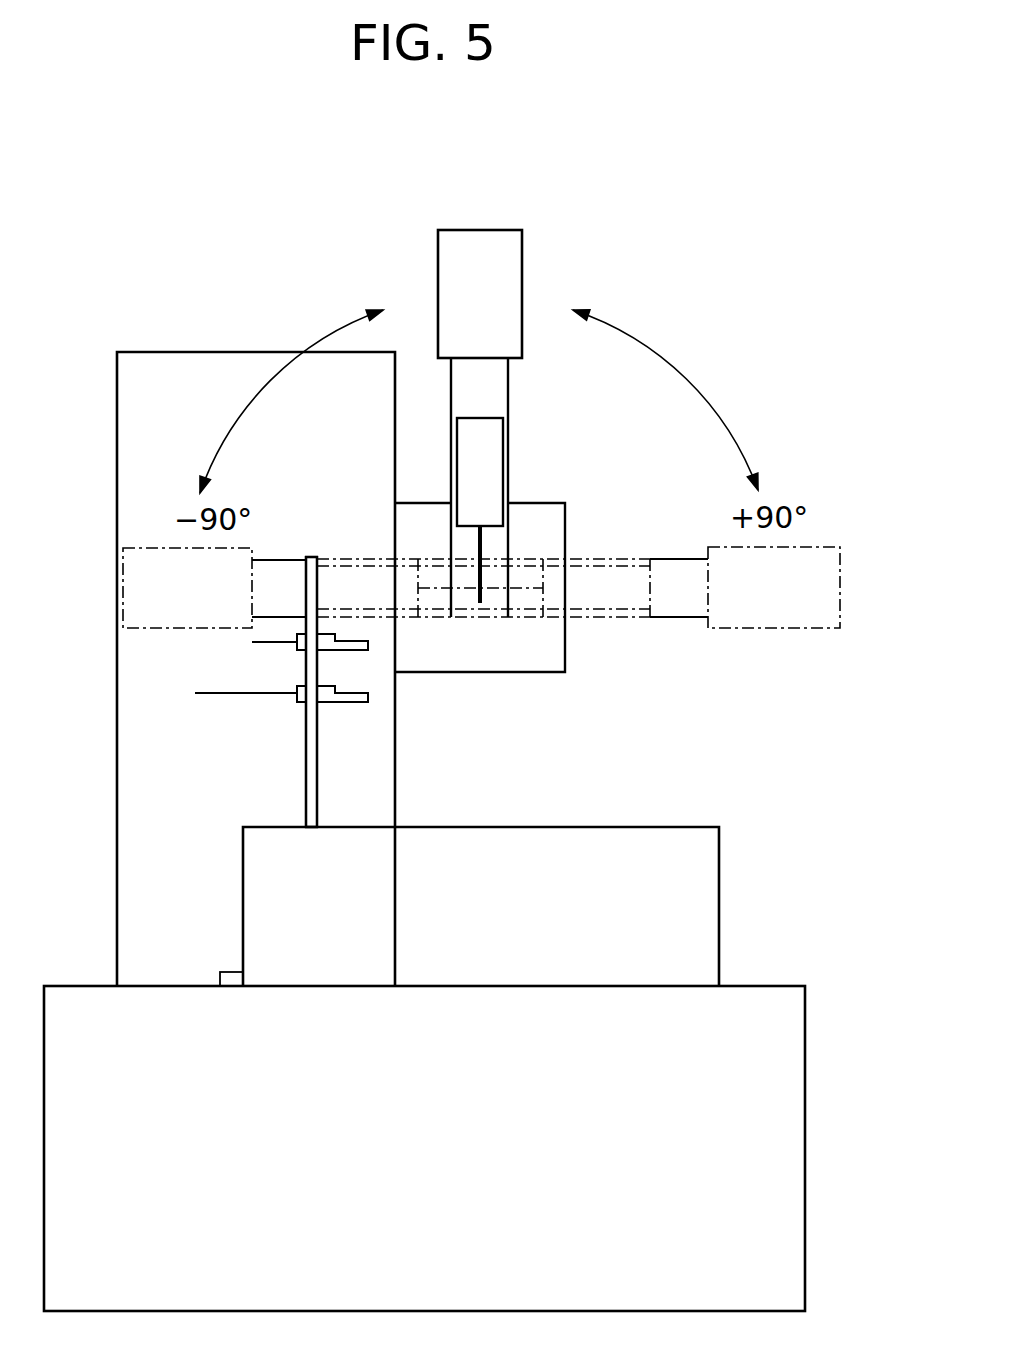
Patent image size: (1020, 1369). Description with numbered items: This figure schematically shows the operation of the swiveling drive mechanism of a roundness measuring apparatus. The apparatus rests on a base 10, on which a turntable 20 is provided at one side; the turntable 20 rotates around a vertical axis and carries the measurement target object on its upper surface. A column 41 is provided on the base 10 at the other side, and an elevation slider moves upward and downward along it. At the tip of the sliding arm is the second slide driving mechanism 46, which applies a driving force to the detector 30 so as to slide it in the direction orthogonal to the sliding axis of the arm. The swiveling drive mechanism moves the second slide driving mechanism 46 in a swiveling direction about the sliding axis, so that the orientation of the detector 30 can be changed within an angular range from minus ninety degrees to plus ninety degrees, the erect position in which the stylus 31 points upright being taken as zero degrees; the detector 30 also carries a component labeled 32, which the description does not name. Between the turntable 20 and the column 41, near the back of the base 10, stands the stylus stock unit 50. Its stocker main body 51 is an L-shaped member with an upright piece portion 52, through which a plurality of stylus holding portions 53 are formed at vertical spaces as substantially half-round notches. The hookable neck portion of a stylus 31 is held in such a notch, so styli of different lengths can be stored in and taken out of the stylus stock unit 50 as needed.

The base 10 is at (795, 1186).
The turntable 20 is at (706, 912).
The detector 30 is at (545, 515).
The stylus 31 is at (490, 548).
The tool holder 32 is at (490, 451).
The column 41 is at (160, 365).
The second slide driving mechanism 46 is at (483, 238).
The stylus stock unit 50 is at (306, 787).
The stocker main body 51 is at (316, 756).
The upright piece portion 52 is at (311, 692).
The stylus holding portions 53 is at (313, 702).